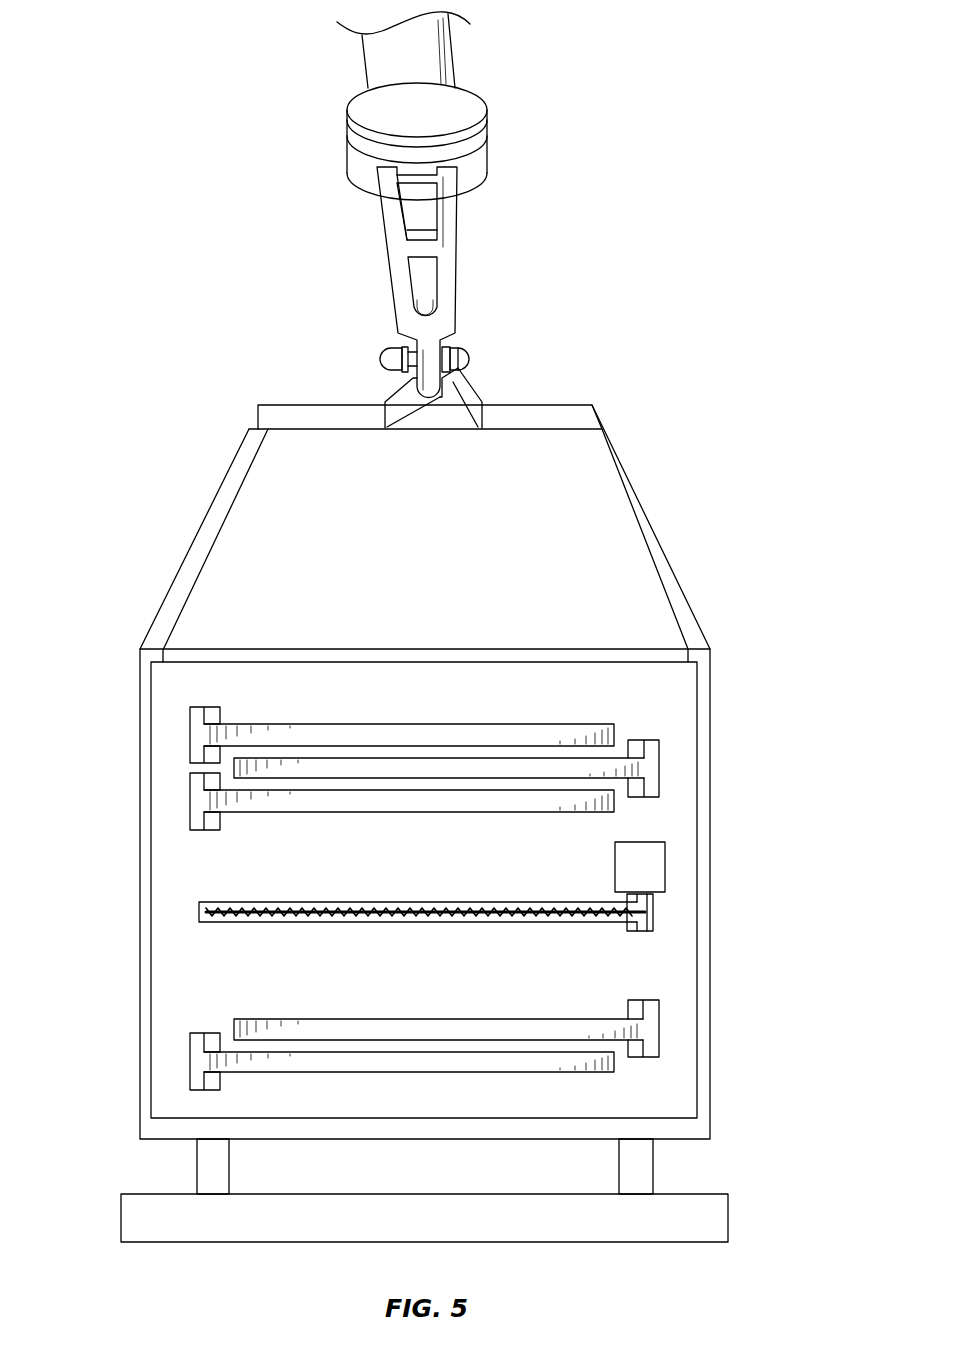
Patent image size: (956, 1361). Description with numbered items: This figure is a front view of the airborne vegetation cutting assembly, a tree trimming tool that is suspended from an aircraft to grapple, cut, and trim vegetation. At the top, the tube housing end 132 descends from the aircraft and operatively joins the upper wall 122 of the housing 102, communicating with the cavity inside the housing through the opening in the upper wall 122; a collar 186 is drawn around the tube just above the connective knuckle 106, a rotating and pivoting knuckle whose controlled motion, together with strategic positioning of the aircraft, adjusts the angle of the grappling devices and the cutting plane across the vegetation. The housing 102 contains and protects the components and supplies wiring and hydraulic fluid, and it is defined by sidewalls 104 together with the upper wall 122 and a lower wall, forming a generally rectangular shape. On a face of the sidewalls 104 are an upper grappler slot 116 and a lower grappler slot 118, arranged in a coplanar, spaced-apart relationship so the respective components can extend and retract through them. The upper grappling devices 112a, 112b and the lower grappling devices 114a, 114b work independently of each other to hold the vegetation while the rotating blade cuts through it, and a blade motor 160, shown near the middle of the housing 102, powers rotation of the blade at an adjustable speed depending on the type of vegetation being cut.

The tube housing end 132 is at (442, 60).
The collar 186 is at (475, 110).
The connective knuckle 106 is at (458, 227).
The upper wall 122 is at (590, 349).
The housing 102 is at (712, 675).
The upper grappler slot 116 is at (190, 742).
The upper grappling device 112a is at (290, 723).
The upper grappling device 112b is at (490, 813).
The blade motor 160 is at (640, 868).
The sidewalls 104 is at (447, 892).
The lower grappler slot 118 is at (243, 901).
The lower grappling device 114a is at (290, 1018).
The lower grappling device 114b is at (490, 1073).